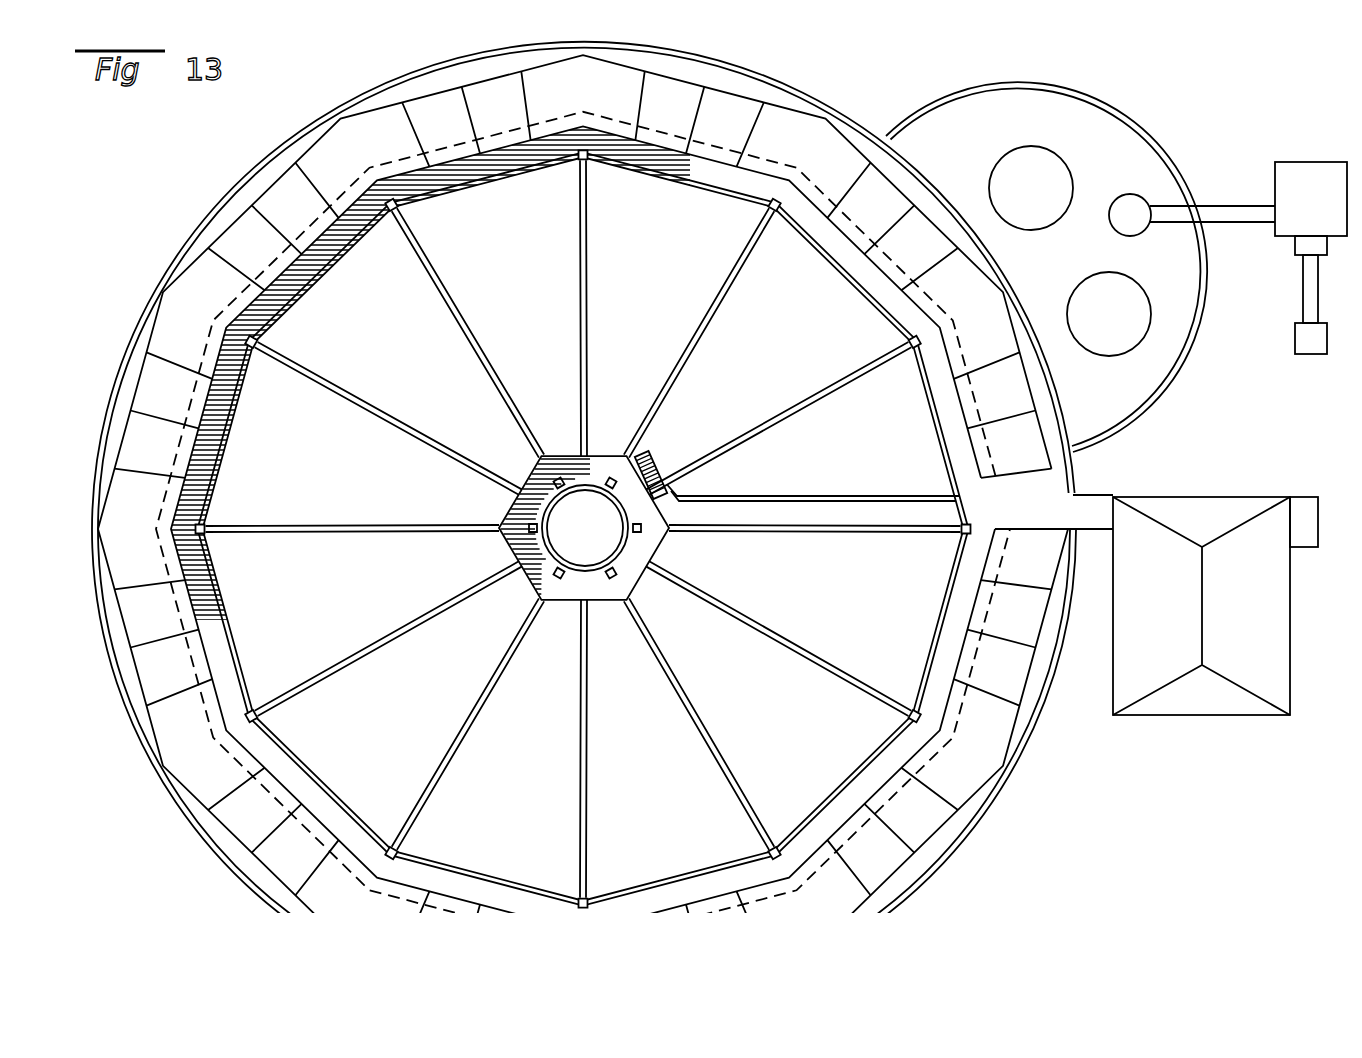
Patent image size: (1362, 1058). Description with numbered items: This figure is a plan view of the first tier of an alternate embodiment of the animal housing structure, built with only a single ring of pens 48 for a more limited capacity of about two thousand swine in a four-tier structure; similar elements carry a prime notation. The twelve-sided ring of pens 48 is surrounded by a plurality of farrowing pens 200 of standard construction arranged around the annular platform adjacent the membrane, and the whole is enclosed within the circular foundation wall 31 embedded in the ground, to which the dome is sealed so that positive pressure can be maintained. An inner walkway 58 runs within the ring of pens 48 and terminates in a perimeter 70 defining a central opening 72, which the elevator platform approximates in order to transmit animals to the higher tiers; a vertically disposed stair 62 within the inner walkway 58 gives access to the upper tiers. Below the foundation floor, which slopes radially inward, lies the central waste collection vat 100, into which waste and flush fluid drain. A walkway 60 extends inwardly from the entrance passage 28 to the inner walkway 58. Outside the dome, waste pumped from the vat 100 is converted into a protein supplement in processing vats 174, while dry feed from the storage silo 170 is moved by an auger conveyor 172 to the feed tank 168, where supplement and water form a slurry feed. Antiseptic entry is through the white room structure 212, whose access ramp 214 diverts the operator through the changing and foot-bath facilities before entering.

The farrowing pens 200 is at (781, 120).
The inner ring of animal confinement pens 48 is at (305, 280).
The circular foundation wall 31 is at (118, 683).
The walkway 60 is at (822, 525).
The stair 62 is at (640, 470).
The inner walkway 58 is at (530, 507).
The perimeter 70 is at (557, 500).
The opening 72 is at (618, 535).
The central waste collection vat 100 is at (556, 558).
The entrance passage 28 is at (1085, 506).
The white room structure 212 is at (1237, 730).
The access ramp 214 is at (1312, 500).
The storage silo 170 is at (1303, 170).
The feed tank 168 is at (1124, 199).
The auger conveyor 172 is at (1242, 196).
The processing vats 174 is at (1088, 290).